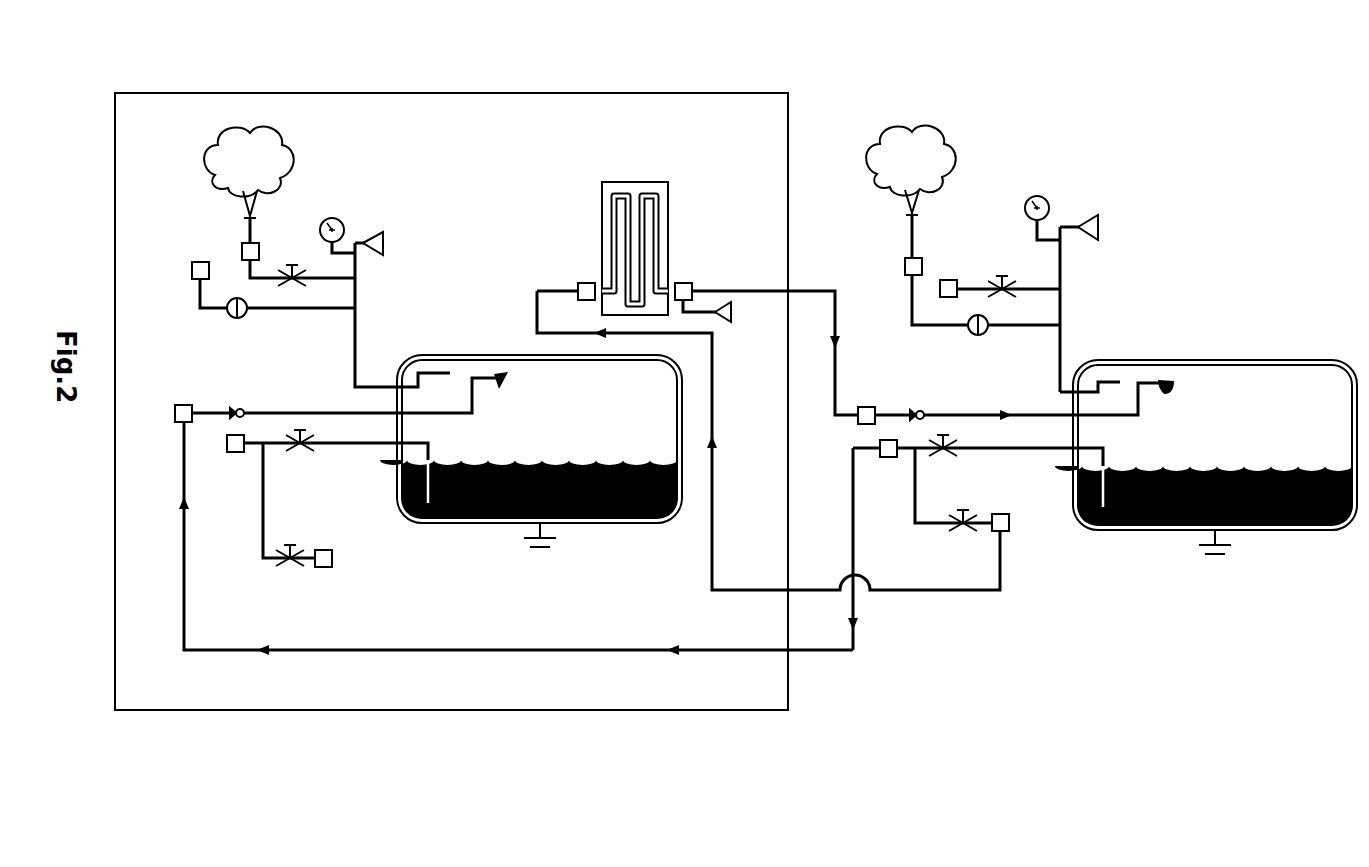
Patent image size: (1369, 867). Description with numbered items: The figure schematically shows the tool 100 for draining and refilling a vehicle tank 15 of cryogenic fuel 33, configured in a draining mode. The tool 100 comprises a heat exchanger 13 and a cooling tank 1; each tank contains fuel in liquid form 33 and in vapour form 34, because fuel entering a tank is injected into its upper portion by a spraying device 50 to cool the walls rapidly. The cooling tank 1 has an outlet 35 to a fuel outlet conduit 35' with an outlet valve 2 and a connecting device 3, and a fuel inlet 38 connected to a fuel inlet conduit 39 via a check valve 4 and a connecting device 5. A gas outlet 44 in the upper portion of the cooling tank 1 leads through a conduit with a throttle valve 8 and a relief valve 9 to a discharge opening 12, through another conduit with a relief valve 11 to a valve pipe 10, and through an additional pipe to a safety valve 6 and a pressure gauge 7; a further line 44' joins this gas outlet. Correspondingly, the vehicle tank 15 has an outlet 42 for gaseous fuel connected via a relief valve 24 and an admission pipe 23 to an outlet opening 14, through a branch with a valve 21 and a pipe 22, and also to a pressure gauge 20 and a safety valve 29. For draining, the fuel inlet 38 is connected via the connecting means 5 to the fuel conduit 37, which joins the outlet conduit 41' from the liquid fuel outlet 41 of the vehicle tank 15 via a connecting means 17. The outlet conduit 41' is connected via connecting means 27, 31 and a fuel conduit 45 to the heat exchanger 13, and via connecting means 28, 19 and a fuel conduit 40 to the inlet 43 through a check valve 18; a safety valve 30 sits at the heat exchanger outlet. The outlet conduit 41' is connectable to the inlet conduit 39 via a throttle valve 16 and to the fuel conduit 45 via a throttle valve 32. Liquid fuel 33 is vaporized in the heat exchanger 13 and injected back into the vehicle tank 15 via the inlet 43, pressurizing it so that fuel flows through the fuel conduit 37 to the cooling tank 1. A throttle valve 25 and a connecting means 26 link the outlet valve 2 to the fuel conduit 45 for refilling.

The tool 100 is at (465, 85).
The cooling tank 1 is at (624, 518).
The outlet valve 2 is at (298, 450).
The connecting device 3 is at (234, 452).
The check valve 4 is at (244, 409).
The connecting device 5 is at (192, 405).
The safety valve 6 is at (384, 243).
The pressure gauge 7 is at (341, 222).
The throttle valve 8 is at (292, 266).
The relief valve 9 is at (242, 250).
The valve pipe 10 is at (197, 262).
The relief valve 11 is at (230, 316).
The discharge opening 12 is at (248, 216).
The heat exchanger 13 is at (668, 191).
The outlet opening 14 is at (908, 214).
The vehicle tank 15 is at (1306, 526).
The throttle valve 16 is at (949, 455).
The connecting means 17 is at (888, 458).
The check valve 18 is at (921, 409).
The connecting means 19 is at (868, 405).
The pressure gauge 20 is at (1030, 198).
The valve 21 is at (1002, 276).
The control unit 22 is at (949, 280).
The admission pipe 23 is at (905, 262).
The relief valve 24 is at (988, 333).
The throttle valve 25 is at (290, 565).
The connecting means 26 is at (333, 568).
The connecting means 27 is at (585, 283).
The connecting means 28 is at (690, 283).
The safety valve 29 is at (1100, 226).
The safety valve 30 is at (733, 320).
The connecting means 31 is at (1010, 525).
The throttle valve 32 is at (962, 530).
The cryogenic fuel 33 is at (866, 492).
The fuel in vapour form 34 is at (943, 409).
The outlet 35 is at (447, 461).
The fuel outlet conduit 35' is at (322, 472).
The fuel conduit 37 is at (515, 652).
The fuel inlet 38 is at (456, 412).
The fuel inlet conduit 39 is at (300, 412).
The fuel conduit 40 is at (835, 292).
The outlet 41 is at (1117, 465).
The outlet conduit 41' is at (986, 479).
The outlet for gaseous fuel 42 is at (1106, 380).
The inlet 43 is at (1165, 382).
The gas outlet 44 is at (427, 351).
The pipe 44' is at (391, 315).
The fuel conduit 45 is at (712, 520).
The spraying device 50 is at (505, 386).